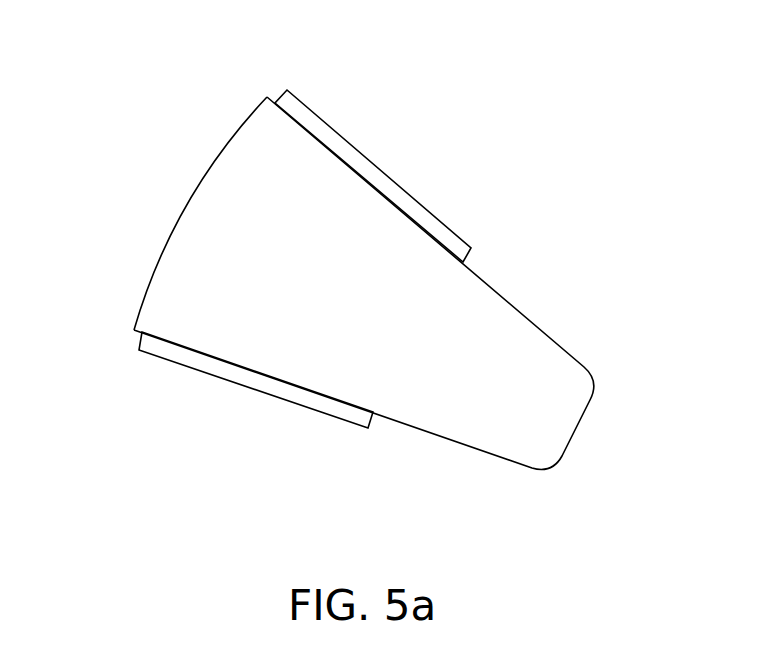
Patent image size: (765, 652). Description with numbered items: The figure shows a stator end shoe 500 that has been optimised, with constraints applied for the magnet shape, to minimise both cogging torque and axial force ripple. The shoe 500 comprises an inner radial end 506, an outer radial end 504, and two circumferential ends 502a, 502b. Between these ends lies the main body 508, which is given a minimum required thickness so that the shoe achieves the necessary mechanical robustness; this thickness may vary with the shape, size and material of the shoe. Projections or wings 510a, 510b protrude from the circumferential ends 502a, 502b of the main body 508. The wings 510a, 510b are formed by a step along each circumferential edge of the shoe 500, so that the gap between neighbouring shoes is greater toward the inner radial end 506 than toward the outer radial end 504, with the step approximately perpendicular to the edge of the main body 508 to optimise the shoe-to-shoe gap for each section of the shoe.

The stator end shoe 500 is at (147, 68).
The circumferential end 502a is at (504, 256).
The circumferential end 502b is at (472, 475).
The outer radial end 504 is at (140, 248).
The inner radial end 506 is at (620, 451).
The main body 508 is at (552, 350).
The wing 510a is at (384, 161).
The wing 510b is at (222, 384).